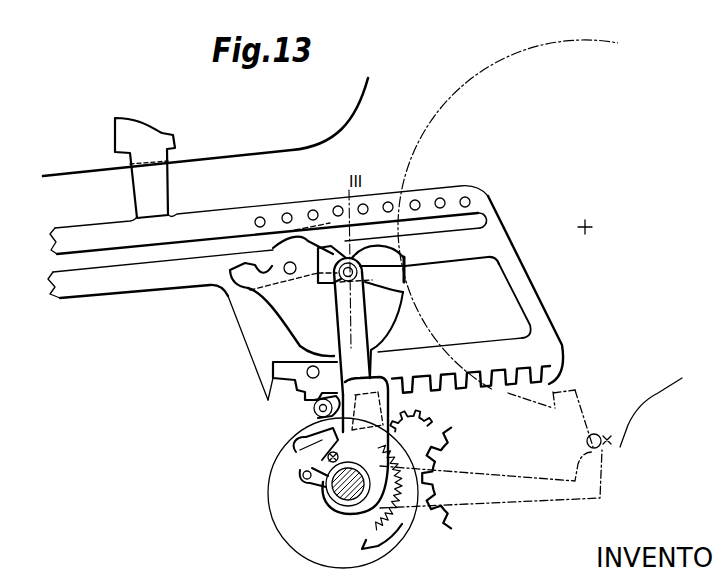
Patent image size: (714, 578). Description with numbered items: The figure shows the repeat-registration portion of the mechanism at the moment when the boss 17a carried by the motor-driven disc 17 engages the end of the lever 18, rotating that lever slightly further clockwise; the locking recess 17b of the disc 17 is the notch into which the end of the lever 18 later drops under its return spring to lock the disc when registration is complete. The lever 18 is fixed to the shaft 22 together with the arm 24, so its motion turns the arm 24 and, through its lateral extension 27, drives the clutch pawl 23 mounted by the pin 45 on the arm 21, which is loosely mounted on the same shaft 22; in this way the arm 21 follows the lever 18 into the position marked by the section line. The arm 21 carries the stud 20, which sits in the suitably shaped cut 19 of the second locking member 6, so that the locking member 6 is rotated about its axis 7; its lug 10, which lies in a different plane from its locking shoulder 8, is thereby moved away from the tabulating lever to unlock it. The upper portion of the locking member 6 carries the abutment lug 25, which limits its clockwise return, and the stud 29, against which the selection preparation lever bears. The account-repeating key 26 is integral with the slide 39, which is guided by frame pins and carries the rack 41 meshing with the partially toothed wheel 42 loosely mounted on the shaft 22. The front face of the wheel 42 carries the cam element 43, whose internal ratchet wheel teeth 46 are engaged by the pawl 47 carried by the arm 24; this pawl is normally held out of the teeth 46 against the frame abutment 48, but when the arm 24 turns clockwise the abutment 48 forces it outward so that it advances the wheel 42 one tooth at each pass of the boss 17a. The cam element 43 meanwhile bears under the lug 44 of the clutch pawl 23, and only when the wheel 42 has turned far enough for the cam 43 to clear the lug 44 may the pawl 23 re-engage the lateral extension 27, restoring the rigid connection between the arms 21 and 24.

The locking member 6 is at (370, 252).
The axis 7 is at (291, 262).
The shoulder 8 is at (332, 340).
The lug 10 is at (275, 364).
The disc 17 is at (668, 395).
The boss 17a is at (598, 440).
The locking recess 17b is at (576, 391).
The lever 18 is at (567, 495).
The cut 19 is at (324, 247).
The stud 20 is at (407, 268).
The arm 21 is at (368, 303).
The shaft 22 is at (333, 487).
The clutch pawl 23 is at (421, 385).
The arm 24 is at (388, 420).
The abutment lug 25 is at (243, 267).
The account-repeating key 26 is at (162, 135).
The lateral extension 27 is at (383, 383).
The stud 29 is at (312, 362).
The slide 39 is at (485, 197).
The rack 41 is at (508, 393).
The partially toothed wheel 42 is at (433, 525).
The cam element 43 is at (383, 535).
The lug 44 is at (297, 443).
The pin 45 is at (314, 409).
The ratchet wheel teeth 46 is at (380, 517).
The pawl 47 is at (328, 459).
The abutment 48 is at (304, 479).